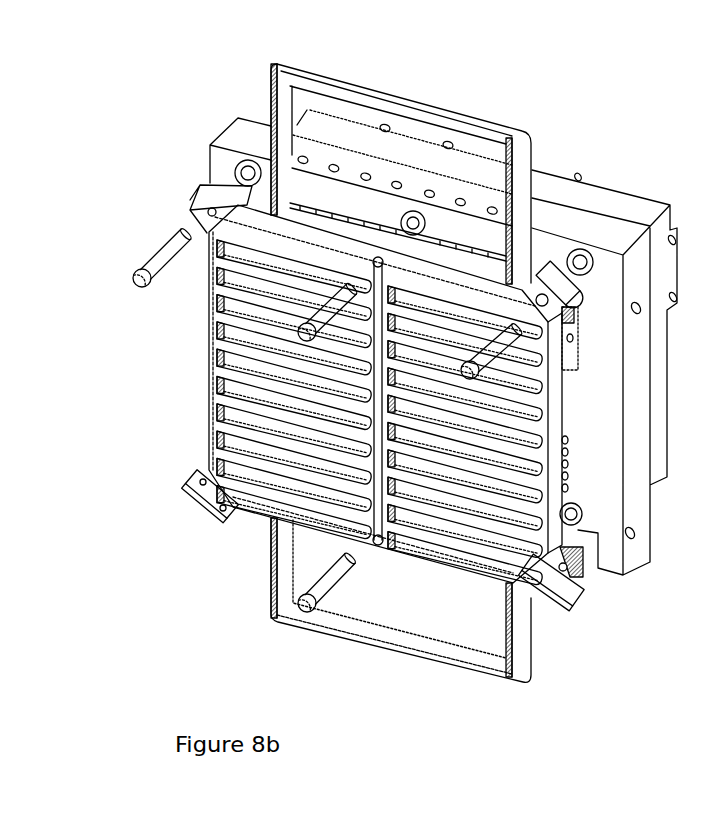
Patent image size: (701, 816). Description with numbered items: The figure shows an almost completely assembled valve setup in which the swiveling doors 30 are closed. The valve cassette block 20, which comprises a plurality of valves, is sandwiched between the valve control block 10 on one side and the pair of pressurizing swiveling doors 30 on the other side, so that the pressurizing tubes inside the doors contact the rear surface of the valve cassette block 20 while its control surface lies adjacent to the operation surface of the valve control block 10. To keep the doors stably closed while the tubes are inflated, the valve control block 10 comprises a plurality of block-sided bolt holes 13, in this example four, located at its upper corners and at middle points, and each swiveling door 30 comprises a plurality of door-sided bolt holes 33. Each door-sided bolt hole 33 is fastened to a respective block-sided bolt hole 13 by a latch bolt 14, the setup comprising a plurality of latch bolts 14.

The valve control block 10 is at (560, 183).
The block-sided bolt hole 13 is at (244, 166).
The latch bolt 14 is at (183, 233).
The valve cassette block 20 is at (452, 115).
The swiveling door 30 is at (207, 422).
The door-sided bolt hole 33 is at (208, 200).